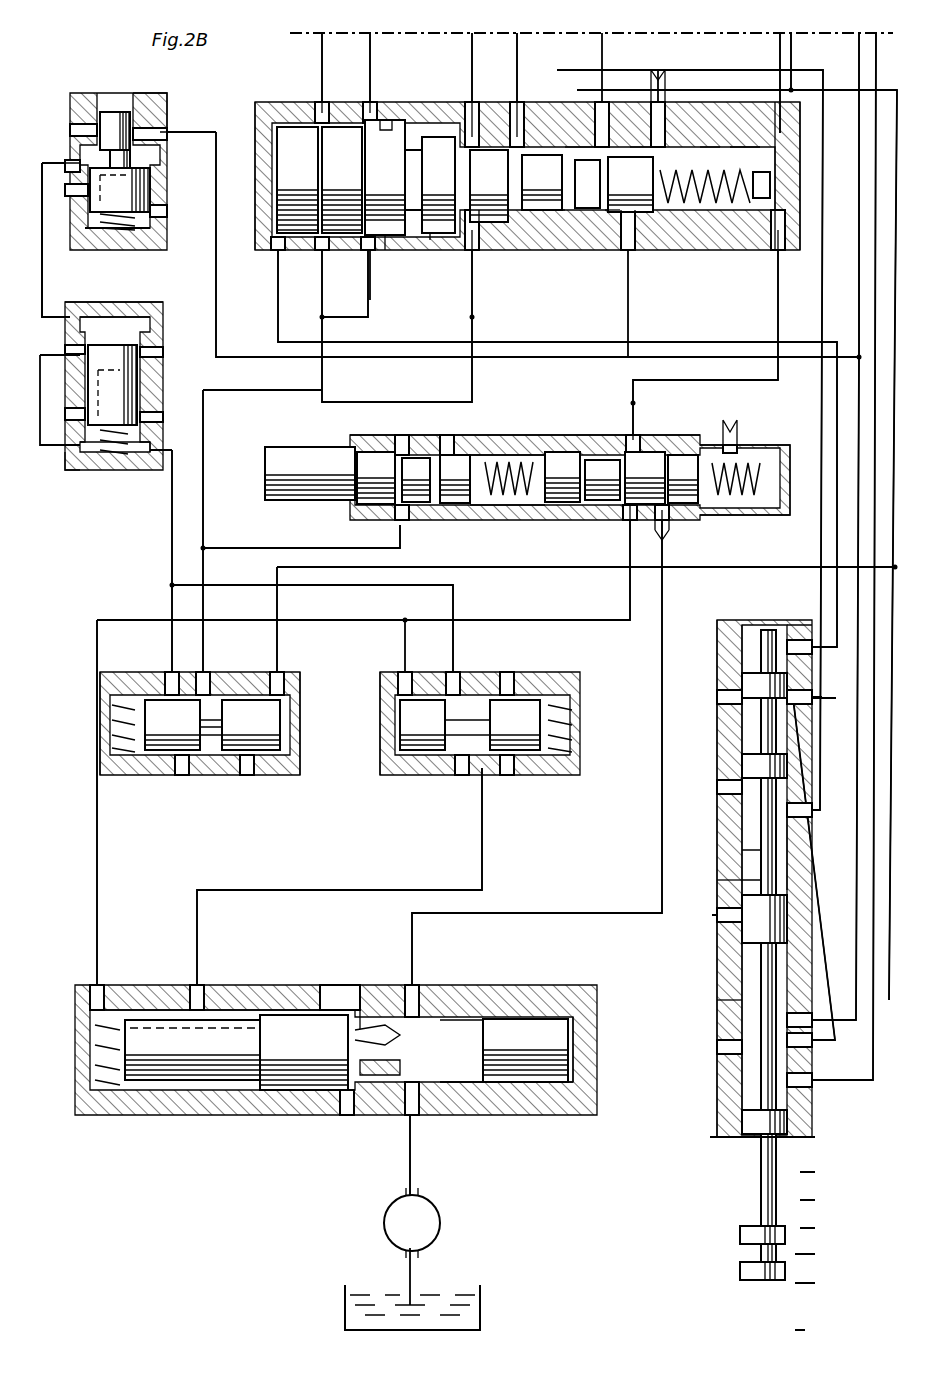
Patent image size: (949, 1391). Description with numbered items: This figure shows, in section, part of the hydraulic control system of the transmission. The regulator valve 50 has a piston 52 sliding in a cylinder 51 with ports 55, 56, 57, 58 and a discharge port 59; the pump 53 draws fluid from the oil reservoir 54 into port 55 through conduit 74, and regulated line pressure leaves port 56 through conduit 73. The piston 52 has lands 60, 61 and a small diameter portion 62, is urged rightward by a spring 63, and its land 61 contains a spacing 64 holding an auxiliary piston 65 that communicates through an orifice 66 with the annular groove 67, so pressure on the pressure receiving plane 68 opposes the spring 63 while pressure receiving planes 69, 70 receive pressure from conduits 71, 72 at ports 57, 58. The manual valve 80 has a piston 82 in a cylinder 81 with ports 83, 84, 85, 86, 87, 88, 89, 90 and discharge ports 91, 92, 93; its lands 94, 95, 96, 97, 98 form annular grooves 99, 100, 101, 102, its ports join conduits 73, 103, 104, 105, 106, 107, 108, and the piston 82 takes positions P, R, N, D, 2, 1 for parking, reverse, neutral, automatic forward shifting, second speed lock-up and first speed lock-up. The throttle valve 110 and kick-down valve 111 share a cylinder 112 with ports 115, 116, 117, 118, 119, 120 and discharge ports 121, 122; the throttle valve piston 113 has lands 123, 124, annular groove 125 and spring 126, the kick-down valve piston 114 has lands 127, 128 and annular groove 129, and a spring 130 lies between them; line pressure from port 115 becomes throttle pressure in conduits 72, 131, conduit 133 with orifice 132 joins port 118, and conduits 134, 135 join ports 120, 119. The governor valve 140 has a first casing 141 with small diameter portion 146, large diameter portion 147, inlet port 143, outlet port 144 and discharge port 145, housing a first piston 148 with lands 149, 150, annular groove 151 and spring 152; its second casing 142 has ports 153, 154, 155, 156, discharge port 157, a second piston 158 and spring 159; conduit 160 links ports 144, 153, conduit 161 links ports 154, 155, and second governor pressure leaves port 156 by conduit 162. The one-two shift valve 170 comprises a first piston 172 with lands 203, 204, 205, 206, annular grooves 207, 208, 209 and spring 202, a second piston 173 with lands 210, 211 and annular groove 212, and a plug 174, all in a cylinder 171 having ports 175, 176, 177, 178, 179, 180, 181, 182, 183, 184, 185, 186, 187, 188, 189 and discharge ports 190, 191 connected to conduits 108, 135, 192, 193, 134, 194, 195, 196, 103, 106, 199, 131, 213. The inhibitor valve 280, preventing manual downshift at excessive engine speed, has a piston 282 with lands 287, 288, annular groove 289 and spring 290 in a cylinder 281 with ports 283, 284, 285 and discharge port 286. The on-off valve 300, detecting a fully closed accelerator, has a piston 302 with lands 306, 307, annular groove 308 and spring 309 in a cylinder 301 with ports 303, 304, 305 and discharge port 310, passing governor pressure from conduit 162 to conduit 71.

The regulator valve 50 is at (290, 945).
The cylinder 51 is at (245, 1010).
The piston 52 is at (350, 1010).
The pump 53 is at (432, 1213).
The oil reservoir 54 is at (480, 1288).
The port 55 is at (405, 1115).
The port 56 is at (415, 990).
The port 57 is at (200, 995).
The port 58 is at (100, 995).
The discharge port 59 is at (345, 1115).
The land 60 is at (285, 1092).
The land 61 is at (515, 1097).
The small diameter portion 62 is at (160, 1082).
The spring 63 is at (100, 1092).
The spacing 64 is at (470, 1020).
The auxiliary piston 65 is at (545, 1019).
The orifice 66 is at (402, 1036).
The annular groove 67 is at (372, 1010).
The pressure receiving plane 68 is at (402, 1066).
The pressure receiving plane 69 is at (240, 1090).
The pressure receiving plane 70 is at (125, 1012).
The conduit 71 is at (482, 830).
The conduit 72 is at (630, 590).
The conduit 73 is at (664, 580).
The conduit 74 is at (411, 1163).
The manual valve 80 is at (745, 605).
The cylinder 81 is at (740, 882).
The piston 82 is at (742, 868).
The port 83 is at (742, 930).
The port 84 is at (795, 1015).
The port 85 is at (812, 1040).
The port 86 is at (805, 1080).
The port 87 is at (792, 870).
The port 88 is at (795, 817).
The port 89 is at (795, 708).
The port 90 is at (787, 676).
The discharge port 91 is at (717, 785).
The discharge port 92 is at (770, 628).
The discharge port 93 is at (730, 1095).
The land 94 is at (742, 682).
The land 95 is at (742, 764).
The land 96 is at (742, 948).
The land 97 is at (742, 1122).
The land 98 is at (740, 1233).
The annular groove 99 is at (740, 722).
The annular groove 100 is at (742, 825).
The annular groove 101 is at (742, 1000).
The annular groove 102 is at (758, 1175).
The conduit 103 is at (216, 325).
The conduit 104 is at (840, 850).
The conduit 105 is at (893, 50).
The conduit 106 is at (791, 50).
The conduit 107 is at (557, 70).
The conduit 108 is at (282, 342).
The throttle valve 110 is at (580, 415).
The kick-down valve 111 is at (480, 412).
The cylinder 112 is at (497, 455).
The throttle valve piston 113 is at (605, 460).
The kick-down valve piston 114 is at (375, 452).
The port 115 is at (690, 508).
The port 116 is at (628, 522).
The port 117 is at (645, 455).
The port 118 is at (748, 445).
The port 119 is at (447, 445).
The port 120 is at (392, 508).
The discharge port 121 is at (470, 505).
The discharge port 122 is at (575, 505).
The land 123 is at (670, 458).
The land 124 is at (568, 452).
The annular groove 125 is at (664, 535).
The spring 126 is at (762, 480).
The land 127 is at (283, 500).
The land 128 is at (425, 502).
The annular groove 129 is at (403, 445).
The spring 130 is at (525, 500).
The conduit 131 is at (633, 386).
The orifice 132 is at (738, 420).
The conduit 133 is at (638, 400).
The conduit 134 is at (225, 392).
The conduit 135 is at (323, 312).
The governor valve 140 is at (115, 260).
The first casing 141 is at (160, 102).
The second casing 142 is at (160, 318).
The inlet port 143 is at (167, 134).
The outlet port 144 is at (70, 165).
The discharge port 145 is at (70, 190).
The small diameter portion 146 is at (80, 128).
The large diameter portion 147 is at (167, 211).
The first piston 148 is at (125, 112).
The small diameter land 149 is at (108, 112).
The large diameter land 150 is at (150, 180).
The annular groove 151 is at (130, 155).
The spring 152 is at (110, 235).
The port 153 is at (68, 317).
The port 154 is at (85, 360).
The port 155 is at (65, 458).
The port 156 is at (150, 455).
The discharge port 157 is at (85, 416).
The second piston 158 is at (137, 386).
The spring 159 is at (105, 455).
The conduit 160 is at (85, 240).
The conduit 161 is at (40, 390).
The conduit 162 is at (172, 522).
The 1-2 shift valve 170 is at (520, 108).
The cylinder 171 is at (432, 137).
The first piston 172 is at (570, 147).
The second piston 173 is at (385, 135).
The plug 174 is at (298, 127).
The port 175 is at (265, 250).
The port 176 is at (318, 248).
The port 177 is at (328, 115).
The port 178 is at (365, 248).
The port 179 is at (372, 115).
The port 180 is at (470, 248).
The port 181 is at (475, 120).
The port 182 is at (482, 250).
The port 183 is at (590, 140).
The port 184 is at (640, 145).
The port 185 is at (630, 248).
The port 186 is at (656, 110).
The port 187 is at (710, 145).
The port 188 is at (776, 250).
The port 189 is at (785, 145).
The discharge port 190 is at (478, 222).
The discharge port 191 is at (585, 212).
The conduit 192 is at (320, 40).
The conduit 193 is at (368, 40).
The conduit 194 is at (470, 42).
The conduit 195 is at (515, 42).
The conduit 196 is at (585, 140).
The conduit 199 is at (700, 88).
The spring 202 is at (780, 230).
The land 203 is at (489, 186).
The land 204 is at (555, 215).
The land 205 is at (630, 184).
The land 206 is at (758, 200).
The annular groove 207 is at (558, 212).
The annular groove 208 is at (612, 215).
The annular groove 209 is at (700, 212).
The large diameter land 210 is at (342, 180).
The small diameter land 211 is at (428, 240).
The annular groove 212 is at (388, 240).
The conduit 213 is at (778, 125).
The inhibitor valve 280 is at (212, 665).
The cylinder 281 is at (222, 690).
The piston 282 is at (246, 775).
The port 283 is at (165, 680).
The port 284 is at (170, 672).
The port 285 is at (285, 680).
The discharge port 286 is at (270, 758).
The land 287 is at (172, 725).
The land 288 is at (251, 725).
The annular groove 289 is at (205, 760).
The spring 290 is at (122, 755).
The on-off valve 300 is at (500, 665).
The cylinder 301 is at (520, 690).
The piston 302 is at (462, 690).
The port 303 is at (402, 680).
The port 304 is at (415, 690).
The port 305 is at (470, 775).
The land 306 is at (422, 725).
The land 307 is at (515, 725).
The annular groove 308 is at (450, 755).
The spring 309 is at (562, 758).
The discharge port 310 is at (507, 775).
The first speed lock-up range position 1 is at (819, 1173).
The second speed lock-up range position 2 is at (819, 1200).
The forward automatic shifting range position D is at (820, 1228).
The neutral position N is at (817, 1254).
The reverse drive position R is at (817, 1283).
The parking position P is at (817, 1330).